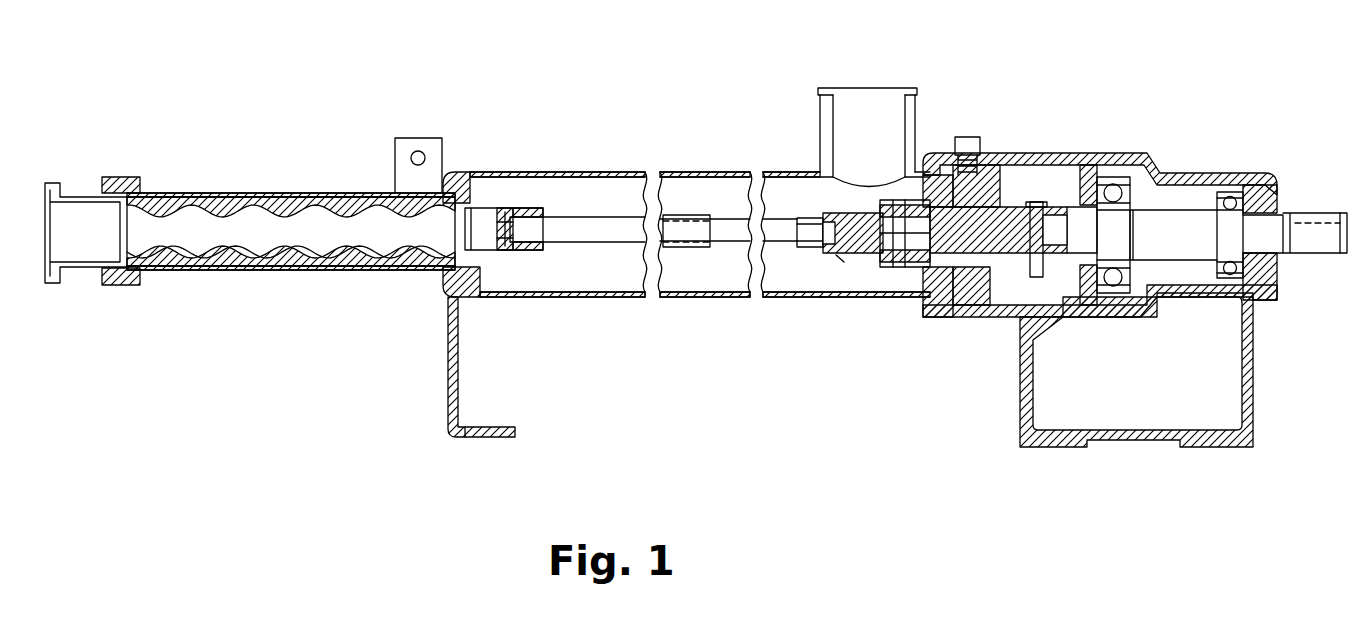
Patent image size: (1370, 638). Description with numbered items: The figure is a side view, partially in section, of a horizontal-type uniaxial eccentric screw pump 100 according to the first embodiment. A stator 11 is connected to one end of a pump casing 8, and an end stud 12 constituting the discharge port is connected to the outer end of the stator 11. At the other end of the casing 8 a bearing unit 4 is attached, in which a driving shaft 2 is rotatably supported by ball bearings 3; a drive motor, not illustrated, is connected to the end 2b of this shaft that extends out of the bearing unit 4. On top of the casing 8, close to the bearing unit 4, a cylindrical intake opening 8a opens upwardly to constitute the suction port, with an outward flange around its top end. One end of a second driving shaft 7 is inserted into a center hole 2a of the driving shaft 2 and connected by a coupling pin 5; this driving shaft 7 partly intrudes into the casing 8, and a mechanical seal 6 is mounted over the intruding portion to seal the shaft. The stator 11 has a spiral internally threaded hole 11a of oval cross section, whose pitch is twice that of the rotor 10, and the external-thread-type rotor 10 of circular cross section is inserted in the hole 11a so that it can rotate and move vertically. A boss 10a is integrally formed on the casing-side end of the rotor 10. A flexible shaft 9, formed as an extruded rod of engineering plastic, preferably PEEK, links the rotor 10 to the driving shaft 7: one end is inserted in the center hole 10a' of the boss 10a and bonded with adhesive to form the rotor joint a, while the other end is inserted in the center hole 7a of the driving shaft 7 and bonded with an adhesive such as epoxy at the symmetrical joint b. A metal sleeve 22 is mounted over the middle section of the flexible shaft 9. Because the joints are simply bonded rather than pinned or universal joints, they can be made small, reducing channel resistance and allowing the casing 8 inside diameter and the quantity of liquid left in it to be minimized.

The uniaxial eccentric screw pump 100 is at (821, 312).
The driving shaft 2 is at (1222, 252).
The center hole 2a is at (997, 206).
The end 2b is at (1330, 243).
The ball bearings 3 is at (1228, 200).
The bearing unit 4 is at (1086, 150).
The coupling pin 5 is at (1037, 201).
The mechanical seal 6 is at (910, 203).
The driving shaft 7 is at (828, 214).
The center hole 7a is at (797, 213).
The pump casing 8 is at (728, 171).
The intake opening 8a is at (835, 105).
The flexible shaft 9 is at (585, 214).
The rotor 10 is at (524, 161).
The boss 10a is at (538, 159).
The center hole 10a' is at (540, 178).
The stator 11 is at (291, 219).
The spiral internally threaded hole 11a is at (313, 252).
The end stud 12 is at (82, 181).
The sleeve 22 is at (681, 214).
The rotor joint a is at (503, 254).
The joint b is at (836, 262).